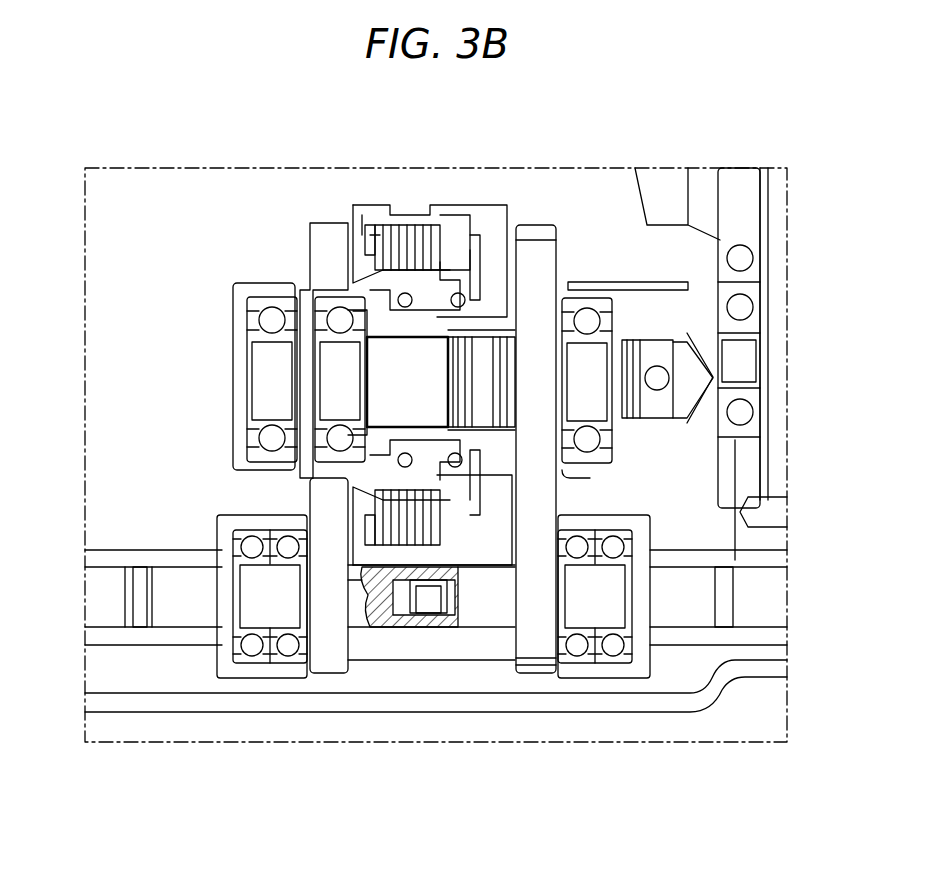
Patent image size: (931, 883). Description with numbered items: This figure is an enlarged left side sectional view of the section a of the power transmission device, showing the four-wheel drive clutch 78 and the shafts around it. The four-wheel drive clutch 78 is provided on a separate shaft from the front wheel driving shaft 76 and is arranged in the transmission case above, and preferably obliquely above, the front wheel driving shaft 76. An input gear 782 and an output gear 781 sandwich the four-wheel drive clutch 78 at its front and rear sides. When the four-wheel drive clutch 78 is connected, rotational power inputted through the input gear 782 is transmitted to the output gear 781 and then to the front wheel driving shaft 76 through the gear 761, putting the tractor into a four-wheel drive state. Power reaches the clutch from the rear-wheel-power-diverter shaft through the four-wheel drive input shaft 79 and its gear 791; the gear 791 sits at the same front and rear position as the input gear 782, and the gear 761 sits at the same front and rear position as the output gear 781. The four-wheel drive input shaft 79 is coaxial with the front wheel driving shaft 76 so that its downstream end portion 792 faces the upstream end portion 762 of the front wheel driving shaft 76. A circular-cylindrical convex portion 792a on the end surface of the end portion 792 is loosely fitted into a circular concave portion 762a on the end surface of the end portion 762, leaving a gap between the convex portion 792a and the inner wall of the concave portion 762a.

The front wheel driving shaft 76 is at (193, 645).
The gear 761 is at (328, 673).
The end portion 762 is at (420, 628).
The concave portion 762a is at (428, 615).
The four-wheel drive clutch 78 is at (545, 190).
The output gear 781 is at (310, 257).
The input gear 782 is at (557, 258).
The four-wheel drive input shaft 79 is at (498, 640).
The gear 791 is at (535, 673).
The end portion 792 is at (500, 630).
The convex portion 792a is at (475, 628).
The section a is at (707, 742).